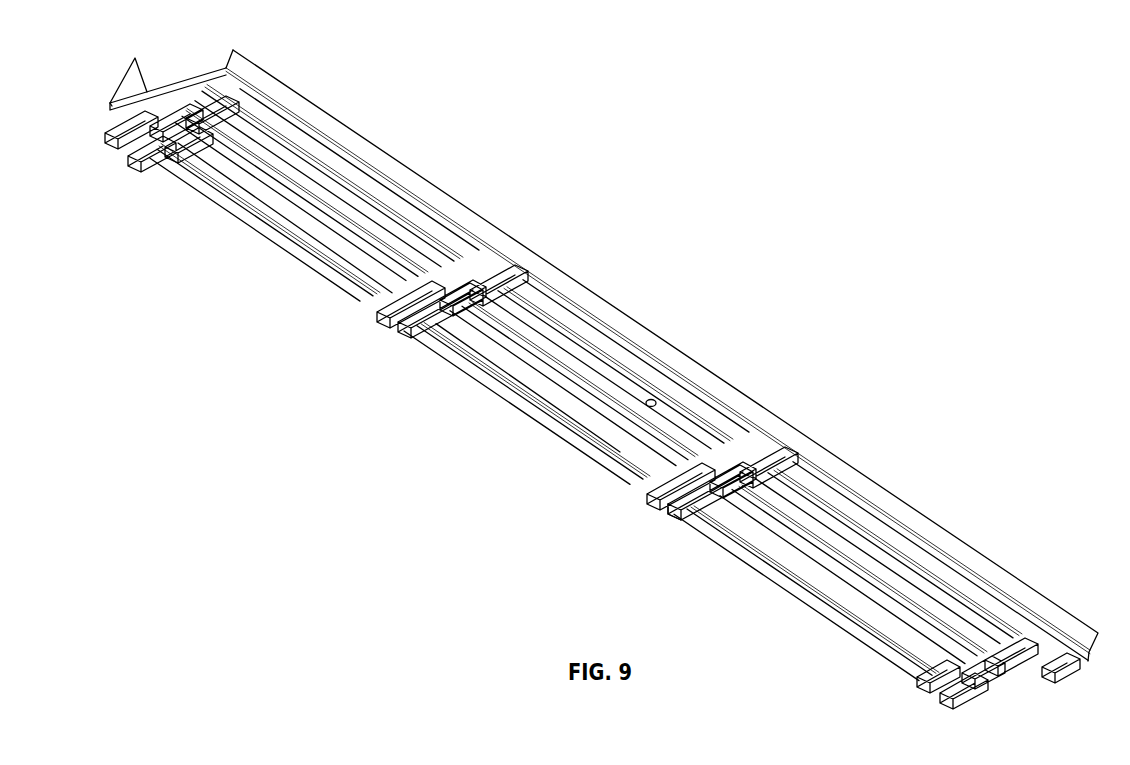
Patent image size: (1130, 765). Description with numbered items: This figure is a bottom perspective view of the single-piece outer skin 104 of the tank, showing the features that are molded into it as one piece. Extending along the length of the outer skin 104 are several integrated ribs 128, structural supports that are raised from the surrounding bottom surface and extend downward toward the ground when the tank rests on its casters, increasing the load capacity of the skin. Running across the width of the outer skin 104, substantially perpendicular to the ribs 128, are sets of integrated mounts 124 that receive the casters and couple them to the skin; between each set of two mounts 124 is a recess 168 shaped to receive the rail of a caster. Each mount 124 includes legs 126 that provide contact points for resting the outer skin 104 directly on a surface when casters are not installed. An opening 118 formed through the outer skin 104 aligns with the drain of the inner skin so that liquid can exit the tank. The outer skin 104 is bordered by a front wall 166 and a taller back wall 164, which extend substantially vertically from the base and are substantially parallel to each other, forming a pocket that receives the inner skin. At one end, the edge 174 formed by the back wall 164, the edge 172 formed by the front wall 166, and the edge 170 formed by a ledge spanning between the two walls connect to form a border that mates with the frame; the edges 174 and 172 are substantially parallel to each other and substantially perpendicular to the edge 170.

The outer skin 104 is at (725, 252).
The opening 118 is at (651, 407).
The mounts 124 is at (712, 508).
The legs 126 is at (682, 523).
The ribs 128 is at (893, 602).
The back wall 164 is at (165, 77).
The front wall 166 is at (435, 198).
The recess 168 is at (455, 296).
The edge 170 is at (143, 92).
The edge 172 is at (234, 53).
The edge 174 is at (112, 100).